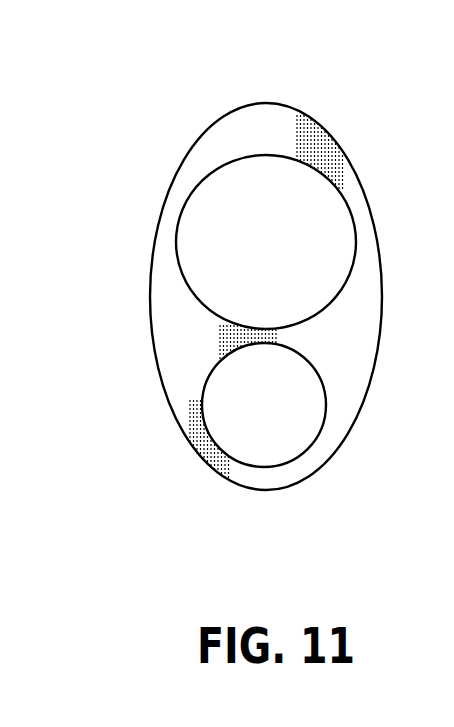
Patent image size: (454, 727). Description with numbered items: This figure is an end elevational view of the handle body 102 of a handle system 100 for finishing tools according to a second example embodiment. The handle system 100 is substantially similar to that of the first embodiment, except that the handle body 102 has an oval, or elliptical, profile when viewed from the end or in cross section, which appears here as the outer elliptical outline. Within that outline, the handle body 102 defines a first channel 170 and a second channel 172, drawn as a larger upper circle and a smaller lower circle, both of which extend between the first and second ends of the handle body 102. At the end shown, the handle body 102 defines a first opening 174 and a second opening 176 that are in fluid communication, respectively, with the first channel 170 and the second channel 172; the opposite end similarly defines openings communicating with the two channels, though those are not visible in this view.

The handle system 100 is at (245, 269).
The handle body 102 is at (242, 257).
The first channel 170 is at (307, 221).
The second channel 172 is at (321, 444).
The first opening 174 is at (205, 217).
The second opening 176 is at (196, 416).